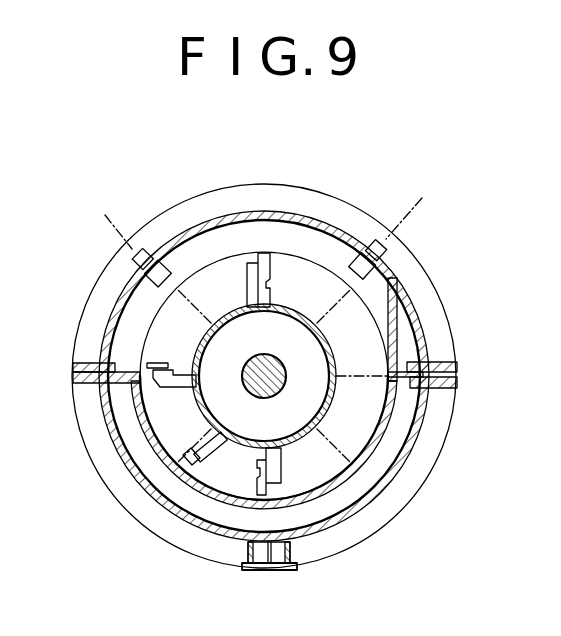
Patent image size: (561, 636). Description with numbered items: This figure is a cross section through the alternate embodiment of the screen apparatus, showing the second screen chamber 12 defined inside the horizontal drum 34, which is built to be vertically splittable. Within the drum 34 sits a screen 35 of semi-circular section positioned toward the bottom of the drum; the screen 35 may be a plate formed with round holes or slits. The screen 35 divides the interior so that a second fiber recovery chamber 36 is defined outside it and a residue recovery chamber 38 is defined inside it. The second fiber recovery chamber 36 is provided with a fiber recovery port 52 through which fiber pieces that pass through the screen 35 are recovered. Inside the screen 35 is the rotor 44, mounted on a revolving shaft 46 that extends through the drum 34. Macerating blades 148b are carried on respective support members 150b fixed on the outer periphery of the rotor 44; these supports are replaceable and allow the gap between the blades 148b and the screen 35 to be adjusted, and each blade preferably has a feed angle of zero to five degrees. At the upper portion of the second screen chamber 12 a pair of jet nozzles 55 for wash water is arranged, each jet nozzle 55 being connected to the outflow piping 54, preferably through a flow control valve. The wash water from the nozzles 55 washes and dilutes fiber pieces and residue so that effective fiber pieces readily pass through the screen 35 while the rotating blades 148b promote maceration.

The second screen chamber 12 is at (394, 210).
The horizontal drum 34 is at (334, 212).
The screen 35 is at (362, 482).
The second fiber recovery chamber 36 is at (400, 437).
The residue recovery chamber 38 is at (305, 510).
The rotor 44 is at (198, 353).
The revolving shaft 46 is at (274, 390).
The fiber recovery port 52 is at (252, 571).
The outflow piping 54 is at (85, 193).
The jet nozzle 55 is at (138, 280).
The macerating blade 148b is at (268, 253).
The support member 150b is at (247, 265).